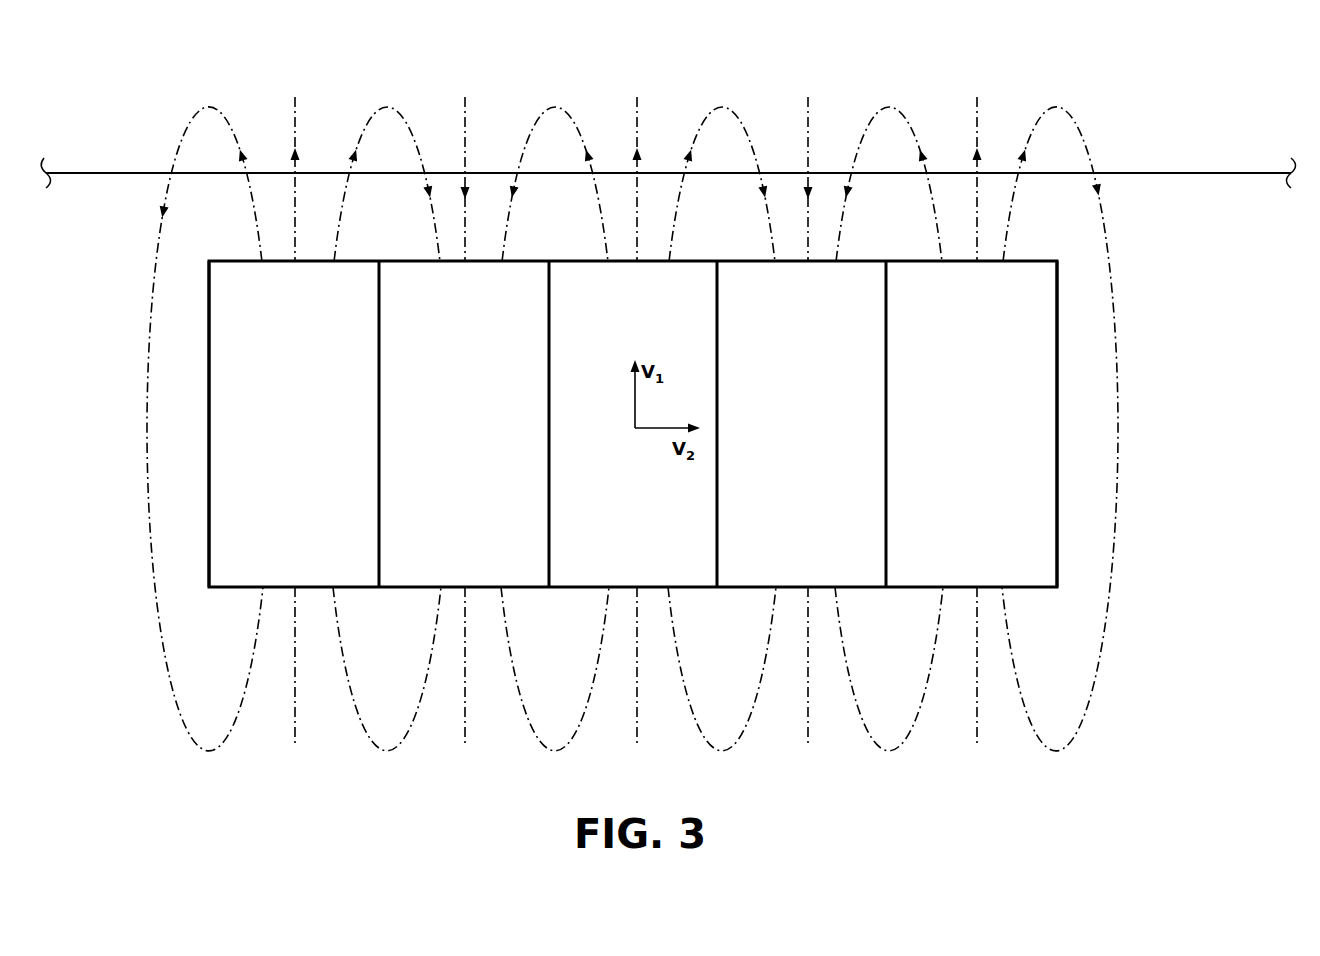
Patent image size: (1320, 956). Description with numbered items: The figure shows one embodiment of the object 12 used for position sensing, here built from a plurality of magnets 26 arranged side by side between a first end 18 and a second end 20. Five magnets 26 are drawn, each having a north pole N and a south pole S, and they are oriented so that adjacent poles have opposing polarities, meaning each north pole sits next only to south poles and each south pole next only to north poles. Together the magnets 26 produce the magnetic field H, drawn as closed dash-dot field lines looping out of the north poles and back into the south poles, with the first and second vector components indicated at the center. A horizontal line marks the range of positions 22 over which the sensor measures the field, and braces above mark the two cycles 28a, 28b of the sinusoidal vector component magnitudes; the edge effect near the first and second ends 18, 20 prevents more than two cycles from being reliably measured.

The object 12 is at (172, 570).
The first end 18 is at (1057, 333).
The second end 20 is at (209, 352).
The range of positions 22 is at (88, 173).
The magnets 26 is at (209, 462).
The first cycle 28a is at (295, 97).
The second cycle 28b is at (977, 97).
The magnetic field H is at (1064, 692).